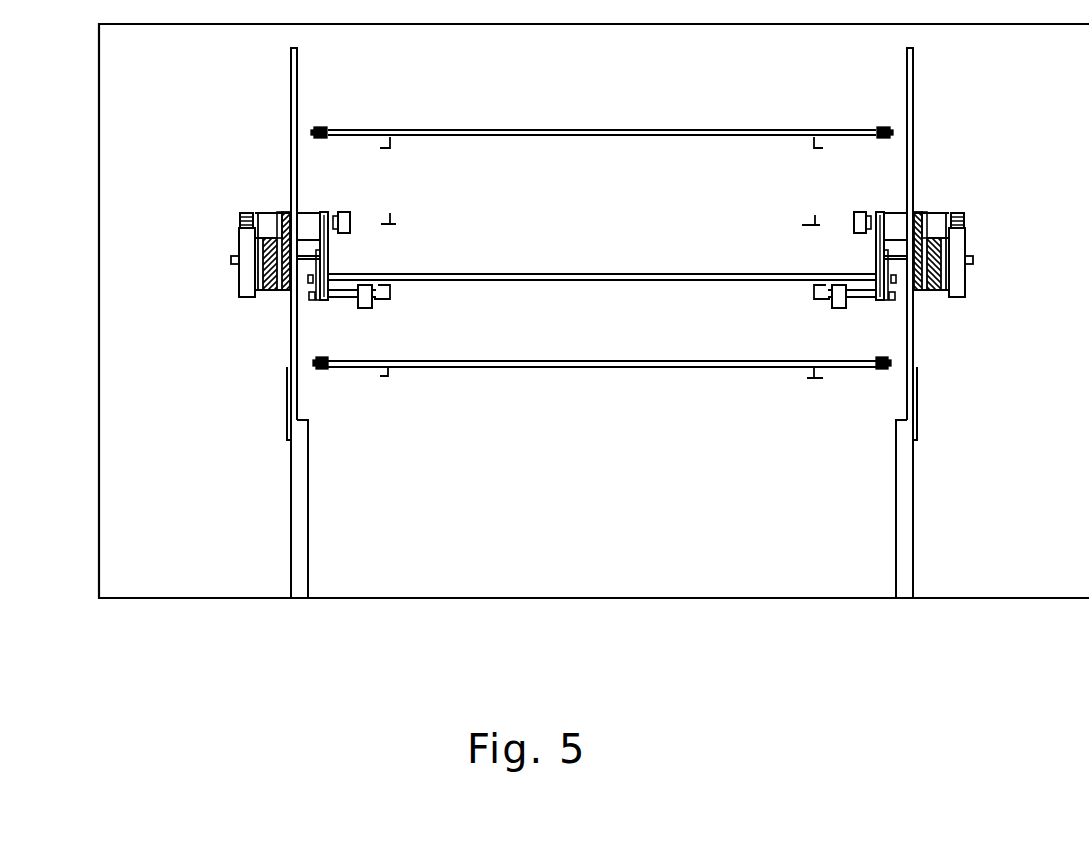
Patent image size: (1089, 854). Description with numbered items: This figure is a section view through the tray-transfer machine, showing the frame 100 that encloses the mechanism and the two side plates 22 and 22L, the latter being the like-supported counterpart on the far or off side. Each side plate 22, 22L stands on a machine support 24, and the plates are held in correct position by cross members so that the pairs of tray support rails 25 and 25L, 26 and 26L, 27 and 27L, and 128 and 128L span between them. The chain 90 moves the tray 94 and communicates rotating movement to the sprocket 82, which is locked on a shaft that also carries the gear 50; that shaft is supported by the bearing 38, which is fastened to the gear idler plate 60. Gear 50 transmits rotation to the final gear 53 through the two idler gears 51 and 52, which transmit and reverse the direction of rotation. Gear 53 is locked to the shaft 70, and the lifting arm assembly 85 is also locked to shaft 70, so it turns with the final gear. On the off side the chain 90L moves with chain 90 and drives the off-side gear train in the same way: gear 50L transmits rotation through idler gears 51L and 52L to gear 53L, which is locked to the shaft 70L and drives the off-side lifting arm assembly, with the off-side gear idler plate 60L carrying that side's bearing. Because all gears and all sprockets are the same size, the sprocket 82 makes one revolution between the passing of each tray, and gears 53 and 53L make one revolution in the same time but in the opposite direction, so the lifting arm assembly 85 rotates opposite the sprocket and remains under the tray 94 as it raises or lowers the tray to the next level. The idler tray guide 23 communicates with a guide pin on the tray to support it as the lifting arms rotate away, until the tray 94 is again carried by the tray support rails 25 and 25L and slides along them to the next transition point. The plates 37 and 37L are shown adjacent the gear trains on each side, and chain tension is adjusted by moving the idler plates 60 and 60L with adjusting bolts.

The housing frame 100 is at (253, 25).
The side plate 22 is at (289, 368).
The side plate 22L is at (912, 380).
The machine support 24 is at (303, 504).
The chain 90 is at (322, 126).
The chain 90L is at (878, 130).
The tray support rail 128 is at (393, 149).
The tray support rail 128L is at (813, 148).
The tray support rail 27 is at (392, 378).
The tray support rail 27L is at (807, 378).
The tray 94 is at (492, 278).
The tray support rail 25 is at (396, 224).
The tray support rail 25L is at (802, 225).
The tray support rail 26 is at (390, 294).
The tray support rail 26L is at (812, 298).
The idler tray guide 23 is at (351, 220).
The gear idler plate 60 is at (301, 213).
The gear idler plate 60L is at (906, 210).
The sprocket 82 is at (329, 234).
The lifting arm assembly 85 is at (320, 293).
The shaft 70 is at (233, 261).
The shaft 70L is at (973, 263).
The gear 50 is at (239, 214).
The gear 50L is at (965, 213).
The idler gear 51 is at (238, 221).
The idler gear 51L is at (947, 216).
The idler gear 52 is at (238, 228).
The idler gear 52L is at (967, 226).
The gear 53 is at (245, 285).
The gear 53L is at (965, 250).
The clamp plate 37 is at (282, 285).
The clamp plate right 37L is at (932, 295).
The bearing 38 is at (272, 213).